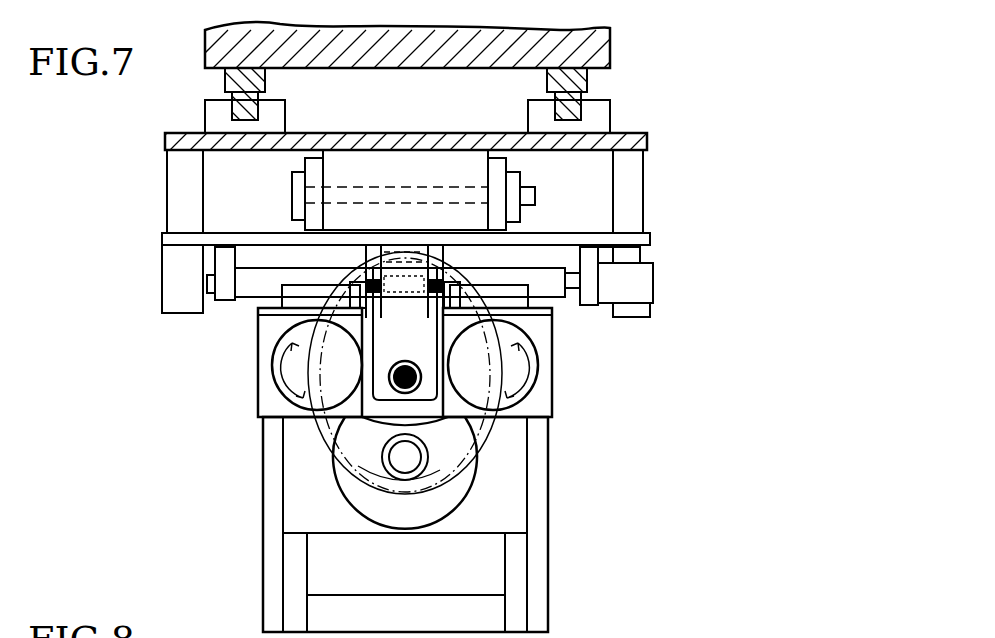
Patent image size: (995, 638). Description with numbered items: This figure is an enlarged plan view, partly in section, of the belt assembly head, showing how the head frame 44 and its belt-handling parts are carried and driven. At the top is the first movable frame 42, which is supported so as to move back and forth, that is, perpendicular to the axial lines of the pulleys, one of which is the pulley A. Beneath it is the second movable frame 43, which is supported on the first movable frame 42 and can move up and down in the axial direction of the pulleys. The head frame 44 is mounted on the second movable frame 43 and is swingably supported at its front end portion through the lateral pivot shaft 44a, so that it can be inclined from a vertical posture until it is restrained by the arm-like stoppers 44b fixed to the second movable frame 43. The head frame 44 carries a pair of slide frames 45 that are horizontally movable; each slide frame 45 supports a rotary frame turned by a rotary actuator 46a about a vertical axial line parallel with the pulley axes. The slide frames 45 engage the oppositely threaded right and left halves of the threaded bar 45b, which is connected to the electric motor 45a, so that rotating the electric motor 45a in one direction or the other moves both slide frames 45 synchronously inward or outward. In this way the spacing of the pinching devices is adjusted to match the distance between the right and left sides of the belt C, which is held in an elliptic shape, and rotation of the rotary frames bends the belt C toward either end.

The first movable frame 42 is at (606, 40).
The second movable frame 43 is at (648, 138).
The head frame 44 is at (648, 233).
The lateral pivot shaft 44a is at (432, 187).
The arm-like stoppers 44b is at (167, 177).
The slide frames 45 is at (265, 349).
The electric motor 45a is at (650, 284).
The threaded bar 45b is at (575, 297).
The rotary actuator 46a is at (278, 377).
The pulley A is at (488, 495).
The belt C is at (318, 422).